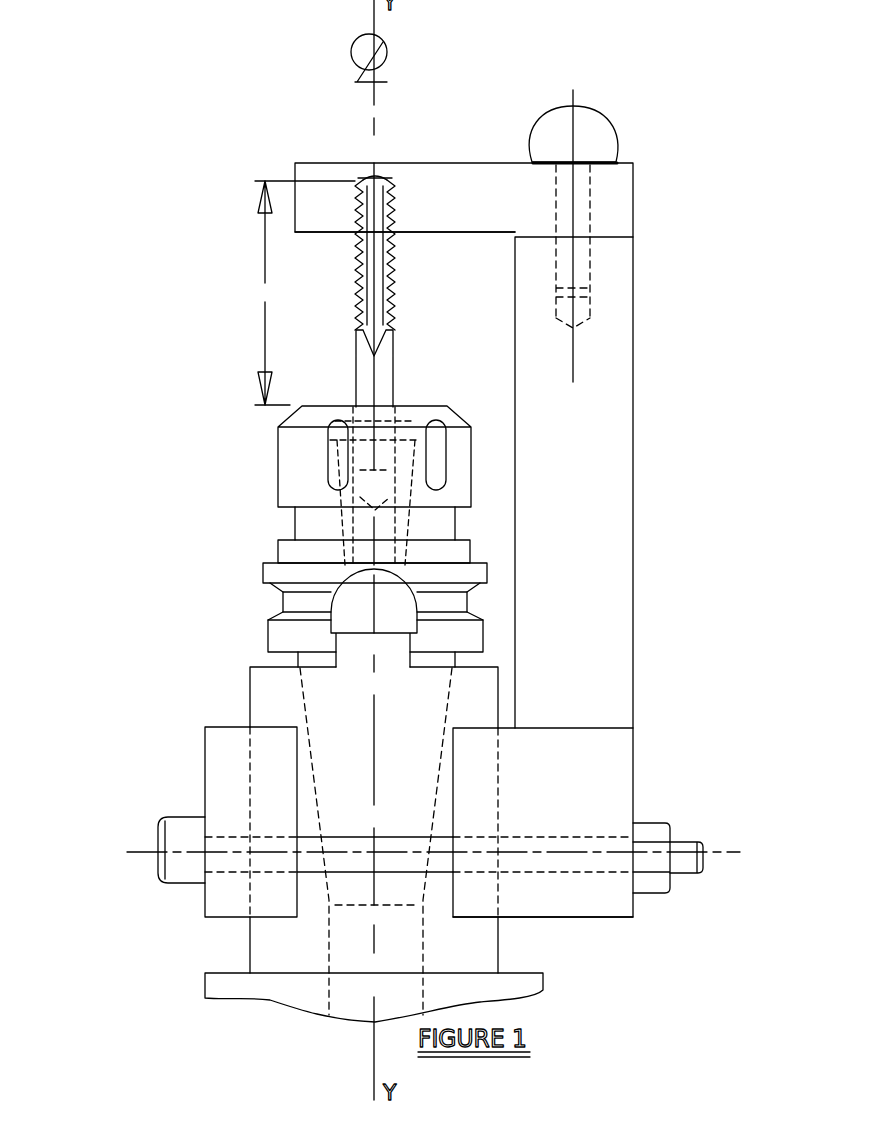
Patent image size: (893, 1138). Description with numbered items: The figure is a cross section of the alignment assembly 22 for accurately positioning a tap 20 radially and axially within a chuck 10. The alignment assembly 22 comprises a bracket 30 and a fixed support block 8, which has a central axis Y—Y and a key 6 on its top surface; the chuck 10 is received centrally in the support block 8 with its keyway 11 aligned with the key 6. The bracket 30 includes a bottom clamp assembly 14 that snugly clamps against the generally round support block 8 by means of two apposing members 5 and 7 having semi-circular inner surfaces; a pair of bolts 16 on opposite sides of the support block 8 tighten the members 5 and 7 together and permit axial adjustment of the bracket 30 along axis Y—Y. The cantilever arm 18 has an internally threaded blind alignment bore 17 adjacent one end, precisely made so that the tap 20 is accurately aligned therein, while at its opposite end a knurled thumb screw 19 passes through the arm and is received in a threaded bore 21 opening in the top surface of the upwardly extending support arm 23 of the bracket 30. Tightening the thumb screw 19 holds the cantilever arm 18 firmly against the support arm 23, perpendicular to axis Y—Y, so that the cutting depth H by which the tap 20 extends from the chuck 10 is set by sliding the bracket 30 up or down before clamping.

The clamp member 5 is at (592, 798).
The key 6 is at (383, 652).
The clamp member 7 is at (268, 893).
The support block 8 is at (490, 968).
The chuck 10 is at (455, 520).
The keyway 11 is at (413, 581).
The clamp assembly 14 is at (123, 720).
The bolts 16 is at (683, 850).
The threaded blind alignment bore 17 is at (398, 197).
The cantilever arm 18 is at (487, 164).
The thumb screw 19 is at (597, 110).
The tap 20 is at (390, 268).
The threaded bore 21 is at (587, 262).
The alignment assembly 22 is at (193, 302).
The support arm 23 is at (582, 445).
The bracket 30 is at (650, 622).